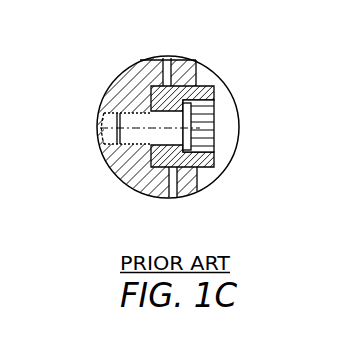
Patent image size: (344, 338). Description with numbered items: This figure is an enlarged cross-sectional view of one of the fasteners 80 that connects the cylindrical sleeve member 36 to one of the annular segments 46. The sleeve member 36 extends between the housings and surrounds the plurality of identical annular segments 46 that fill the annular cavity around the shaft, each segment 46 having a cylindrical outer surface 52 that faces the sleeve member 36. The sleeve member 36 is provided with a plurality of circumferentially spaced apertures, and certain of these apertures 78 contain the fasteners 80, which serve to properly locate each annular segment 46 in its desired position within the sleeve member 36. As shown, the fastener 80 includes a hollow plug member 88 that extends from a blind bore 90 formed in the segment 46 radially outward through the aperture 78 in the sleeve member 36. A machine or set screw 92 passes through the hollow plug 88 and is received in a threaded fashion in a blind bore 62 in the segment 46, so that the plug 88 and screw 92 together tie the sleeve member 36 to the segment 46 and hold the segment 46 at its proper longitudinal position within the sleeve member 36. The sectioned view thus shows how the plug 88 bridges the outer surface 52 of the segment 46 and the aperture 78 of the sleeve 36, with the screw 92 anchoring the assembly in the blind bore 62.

The cylindrical sleeve member 36 is at (189, 59).
The annular segment 46 is at (112, 87).
The cylindrical outer surface 52 is at (174, 61).
The blind bore 62 is at (112, 146).
The aperture 78 is at (206, 172).
The fastener 80 is at (233, 123).
The hollow plug member 88 is at (222, 160).
The blind bore 90 is at (155, 80).
The set screw 92 is at (215, 110).